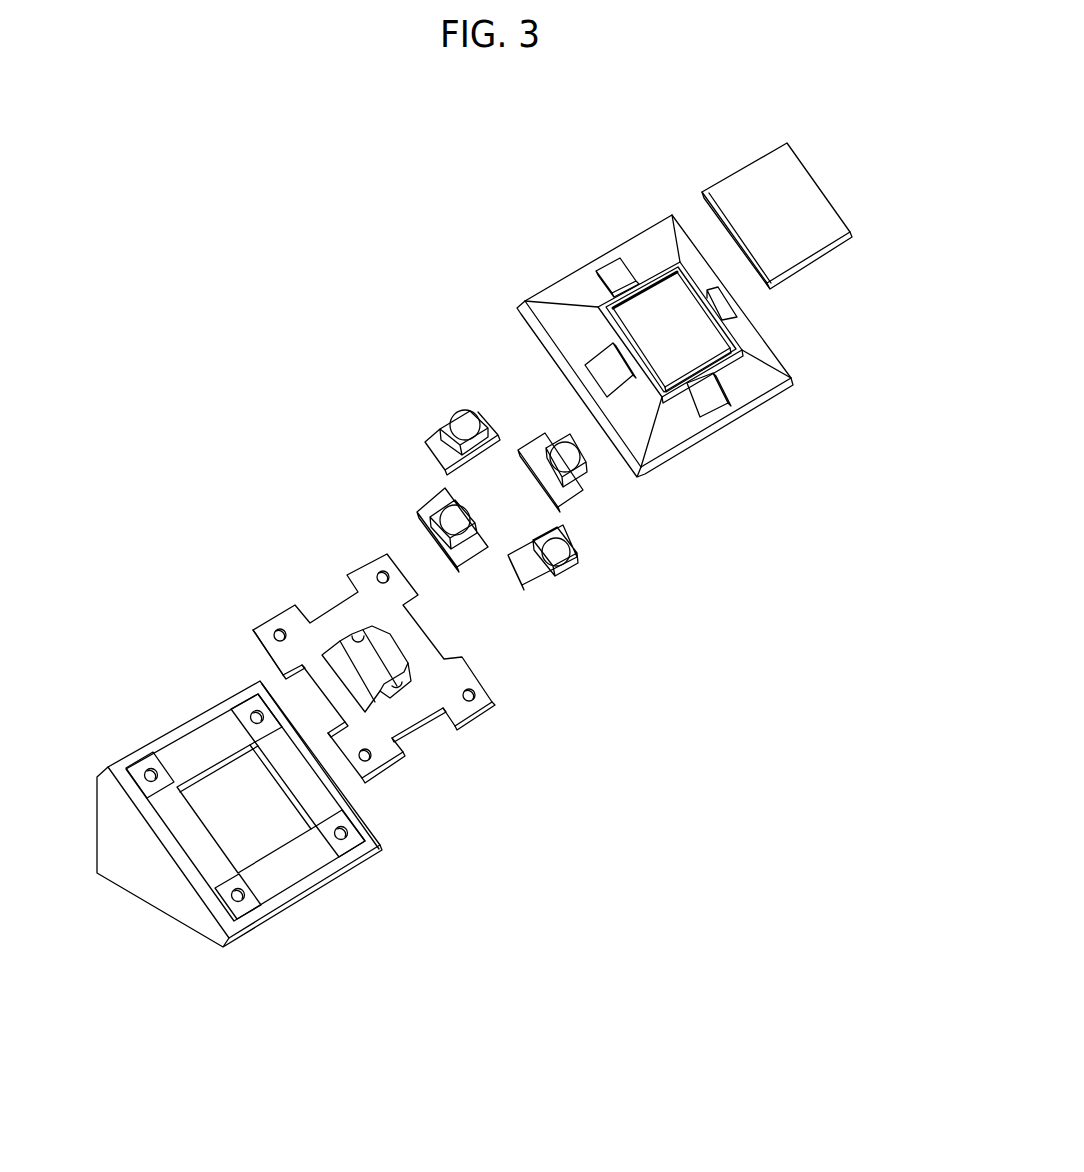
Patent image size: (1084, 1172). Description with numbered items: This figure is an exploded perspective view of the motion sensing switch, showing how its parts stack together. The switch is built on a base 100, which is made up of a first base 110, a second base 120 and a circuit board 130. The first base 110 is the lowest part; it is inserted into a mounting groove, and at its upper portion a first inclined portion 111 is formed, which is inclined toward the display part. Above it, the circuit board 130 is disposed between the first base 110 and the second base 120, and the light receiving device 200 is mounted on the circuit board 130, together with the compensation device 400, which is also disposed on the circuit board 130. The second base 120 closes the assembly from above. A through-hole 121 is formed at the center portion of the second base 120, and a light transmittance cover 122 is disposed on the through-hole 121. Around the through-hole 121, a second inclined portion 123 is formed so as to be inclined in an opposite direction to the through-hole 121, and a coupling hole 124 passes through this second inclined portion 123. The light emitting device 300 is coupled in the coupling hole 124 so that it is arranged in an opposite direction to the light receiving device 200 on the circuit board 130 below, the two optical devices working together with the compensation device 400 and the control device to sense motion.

The base 100 is at (734, 718).
The first base 110 is at (357, 888).
The first inclined portion 111 is at (180, 732).
The second base 120 is at (705, 463).
The through-hole 121 is at (680, 338).
The light transmittance cover 122 is at (792, 185).
The second inclined portion 123 is at (556, 291).
The coupling hole 124 is at (606, 273).
The circuit board 130 is at (482, 723).
The light receiving device 200 is at (376, 648).
The light emitting device 300 is at (460, 422).
The compensation device 400 is at (348, 636).